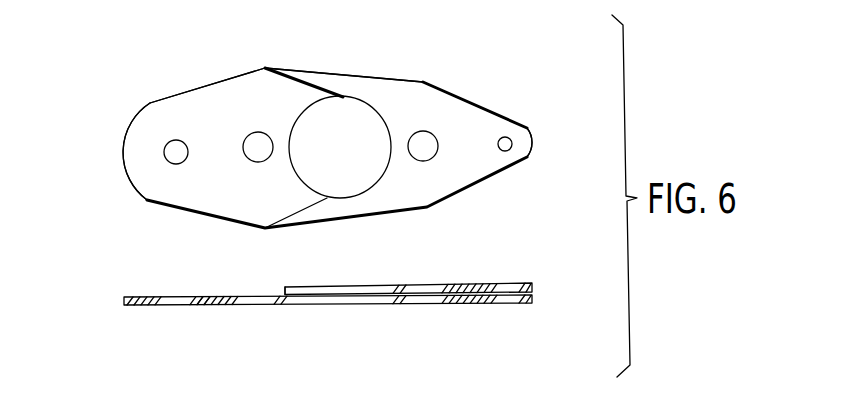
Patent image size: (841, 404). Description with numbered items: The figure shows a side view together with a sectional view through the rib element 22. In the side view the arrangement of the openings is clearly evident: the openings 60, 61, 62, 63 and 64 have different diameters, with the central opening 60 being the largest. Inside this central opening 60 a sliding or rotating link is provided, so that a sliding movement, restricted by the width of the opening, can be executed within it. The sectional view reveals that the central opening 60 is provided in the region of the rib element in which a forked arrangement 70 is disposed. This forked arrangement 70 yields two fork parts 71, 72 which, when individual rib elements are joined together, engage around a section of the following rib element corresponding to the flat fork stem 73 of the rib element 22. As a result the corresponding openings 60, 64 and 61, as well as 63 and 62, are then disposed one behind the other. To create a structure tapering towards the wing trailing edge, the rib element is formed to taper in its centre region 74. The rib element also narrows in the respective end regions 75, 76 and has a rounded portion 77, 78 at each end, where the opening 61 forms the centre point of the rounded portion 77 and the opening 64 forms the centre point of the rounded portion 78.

The rib element 22 is at (67, 66).
The central opening 60 is at (339, 107).
The opening 61 is at (168, 152).
The opening 62 is at (257, 138).
The opening 63 is at (423, 133).
The opening 64 is at (507, 146).
The forked arrangement 70 is at (288, 308).
The fork part 71 is at (535, 287).
The fork part 72 is at (534, 299).
The flat fork stem 73 is at (205, 307).
The centre region 74 is at (379, 78).
The end region 75 is at (193, 90).
The end region 76 is at (483, 107).
The rounded portion 77 is at (128, 125).
The rounded portion 78 is at (527, 128).